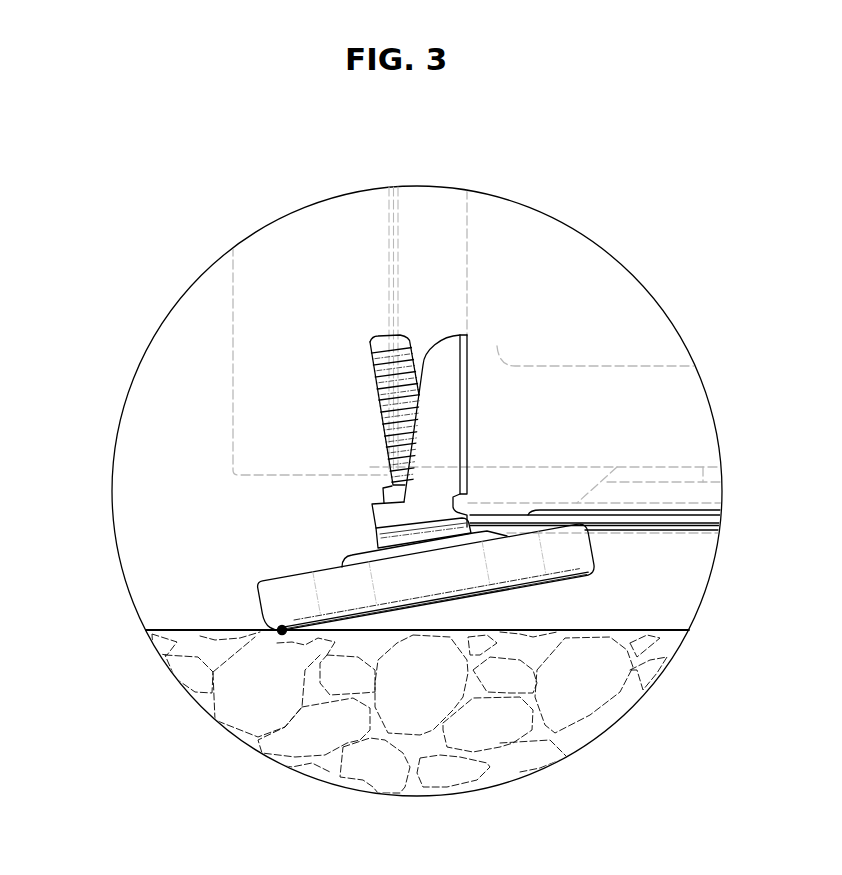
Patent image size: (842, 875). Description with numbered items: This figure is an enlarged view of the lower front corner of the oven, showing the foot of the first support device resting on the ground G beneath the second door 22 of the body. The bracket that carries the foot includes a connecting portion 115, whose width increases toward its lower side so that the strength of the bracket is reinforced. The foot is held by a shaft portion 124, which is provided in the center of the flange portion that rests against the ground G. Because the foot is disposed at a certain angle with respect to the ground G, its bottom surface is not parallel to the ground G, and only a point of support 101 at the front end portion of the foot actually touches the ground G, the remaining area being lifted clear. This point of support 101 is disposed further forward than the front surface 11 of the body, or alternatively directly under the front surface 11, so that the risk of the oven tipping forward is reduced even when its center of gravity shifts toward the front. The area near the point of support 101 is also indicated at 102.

The shaft portion 124 is at (370, 342).
The front surface 11 is at (398, 237).
The connecting portion 115 is at (440, 382).
The second door 22 is at (233, 320).
The ground G is at (177, 628).
The point of support 101 is at (282, 632).
The pad 102 is at (573, 577).